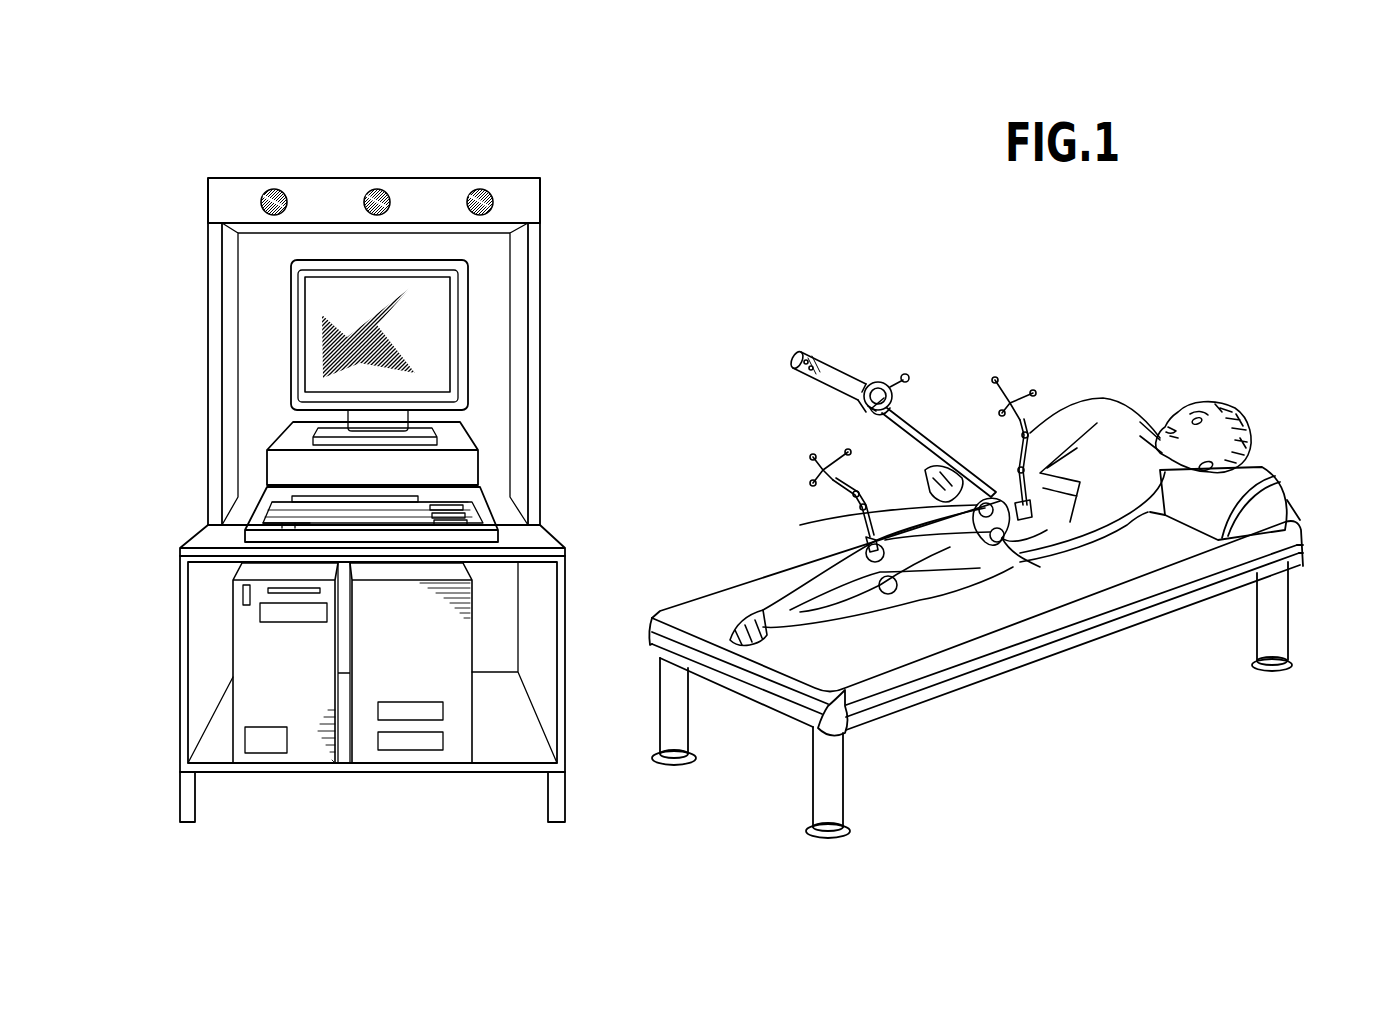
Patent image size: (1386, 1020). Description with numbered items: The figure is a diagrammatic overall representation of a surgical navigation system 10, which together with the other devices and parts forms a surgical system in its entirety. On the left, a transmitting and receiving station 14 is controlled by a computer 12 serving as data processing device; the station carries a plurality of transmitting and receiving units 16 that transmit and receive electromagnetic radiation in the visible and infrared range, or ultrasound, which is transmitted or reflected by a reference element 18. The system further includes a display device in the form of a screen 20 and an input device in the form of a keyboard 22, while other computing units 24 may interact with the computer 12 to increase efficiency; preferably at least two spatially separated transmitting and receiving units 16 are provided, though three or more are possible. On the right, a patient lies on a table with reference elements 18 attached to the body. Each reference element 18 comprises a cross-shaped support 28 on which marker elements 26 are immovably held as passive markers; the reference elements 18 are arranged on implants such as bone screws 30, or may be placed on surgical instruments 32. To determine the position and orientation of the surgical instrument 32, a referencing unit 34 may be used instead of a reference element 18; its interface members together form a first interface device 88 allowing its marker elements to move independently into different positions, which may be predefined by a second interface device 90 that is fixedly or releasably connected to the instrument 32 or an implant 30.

The surgical navigation system 10 is at (853, 253).
The computer 12 is at (494, 457).
The transmitting and receiving station 14 is at (494, 143).
The transmitting and receiving unit 16 is at (272, 189).
The reference element 18 is at (805, 473).
The screen 20 is at (488, 348).
The keyboard 22 is at (500, 520).
The computing unit 24 is at (299, 748).
The marker element 26 is at (813, 458).
The cross-shaped support 28 is at (833, 495).
The bone screw 30 is at (867, 538).
The surgical instrument 32 is at (930, 420).
The referencing unit 34 is at (895, 377).
The first interface device 88 is at (880, 422).
The second interface device 90 is at (870, 393).